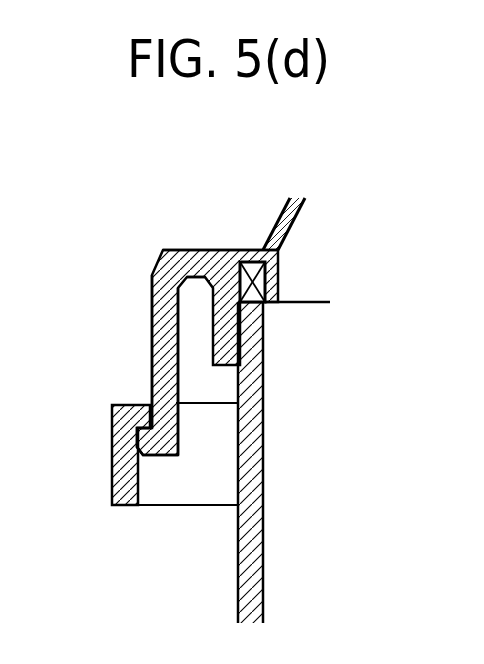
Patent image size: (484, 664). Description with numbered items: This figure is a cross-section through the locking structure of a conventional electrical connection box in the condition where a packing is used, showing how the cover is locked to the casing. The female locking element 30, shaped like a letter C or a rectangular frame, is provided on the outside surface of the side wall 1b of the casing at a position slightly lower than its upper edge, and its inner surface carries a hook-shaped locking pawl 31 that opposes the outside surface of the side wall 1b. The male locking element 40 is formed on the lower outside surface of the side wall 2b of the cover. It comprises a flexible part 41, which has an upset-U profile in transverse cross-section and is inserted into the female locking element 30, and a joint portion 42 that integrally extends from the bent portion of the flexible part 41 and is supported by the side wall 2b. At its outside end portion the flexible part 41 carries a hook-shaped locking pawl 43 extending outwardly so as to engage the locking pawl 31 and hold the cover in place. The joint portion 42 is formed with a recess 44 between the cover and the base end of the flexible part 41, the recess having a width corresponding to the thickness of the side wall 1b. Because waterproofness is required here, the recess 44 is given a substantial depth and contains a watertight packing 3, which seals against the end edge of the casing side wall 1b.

The side wall of the casing 1b is at (252, 583).
The side wall of the cover 2b is at (297, 222).
The watertight packing 3 is at (267, 278).
The female locking element 30 is at (125, 497).
The hook-shaped locking pawl 31 is at (112, 405).
The male locking element 40 is at (203, 326).
The flexible part 41 is at (163, 327).
The joint portion 42 is at (203, 248).
The hook-shaped locking pawl 43 is at (157, 450).
The recess 44 is at (278, 302).